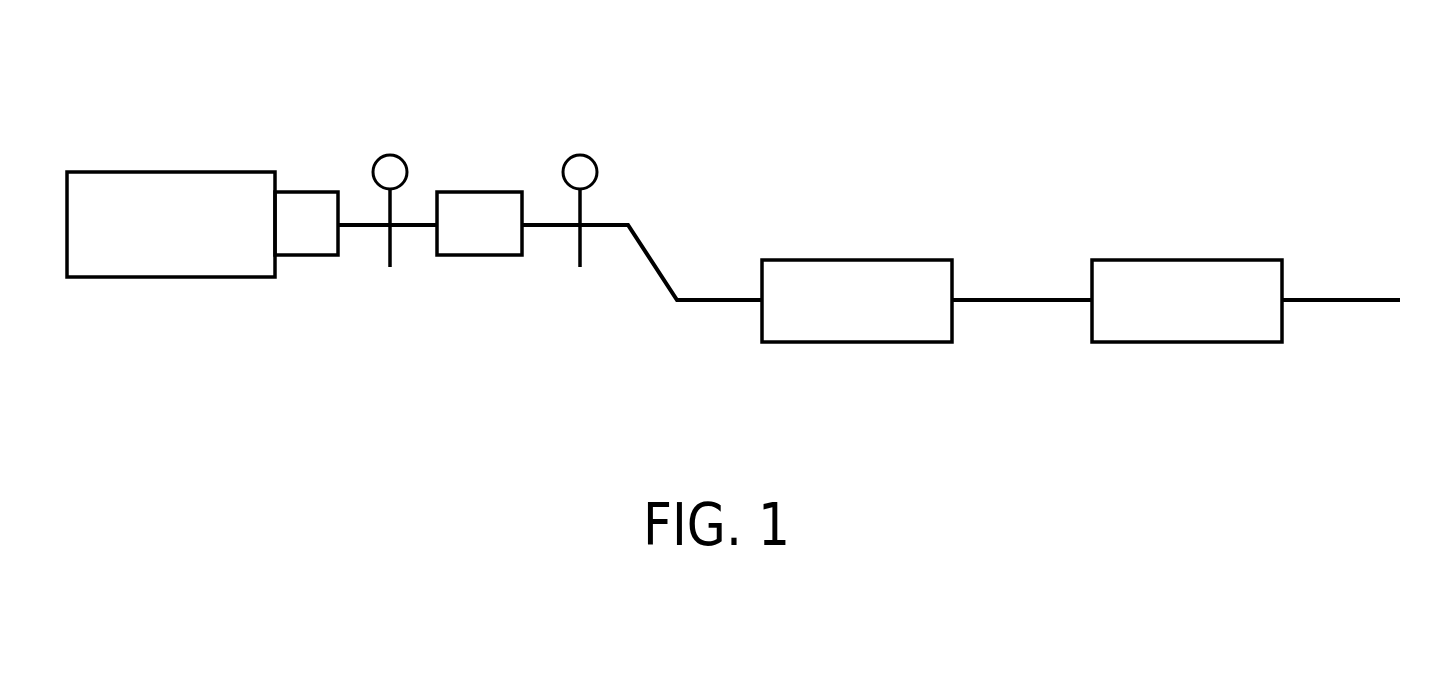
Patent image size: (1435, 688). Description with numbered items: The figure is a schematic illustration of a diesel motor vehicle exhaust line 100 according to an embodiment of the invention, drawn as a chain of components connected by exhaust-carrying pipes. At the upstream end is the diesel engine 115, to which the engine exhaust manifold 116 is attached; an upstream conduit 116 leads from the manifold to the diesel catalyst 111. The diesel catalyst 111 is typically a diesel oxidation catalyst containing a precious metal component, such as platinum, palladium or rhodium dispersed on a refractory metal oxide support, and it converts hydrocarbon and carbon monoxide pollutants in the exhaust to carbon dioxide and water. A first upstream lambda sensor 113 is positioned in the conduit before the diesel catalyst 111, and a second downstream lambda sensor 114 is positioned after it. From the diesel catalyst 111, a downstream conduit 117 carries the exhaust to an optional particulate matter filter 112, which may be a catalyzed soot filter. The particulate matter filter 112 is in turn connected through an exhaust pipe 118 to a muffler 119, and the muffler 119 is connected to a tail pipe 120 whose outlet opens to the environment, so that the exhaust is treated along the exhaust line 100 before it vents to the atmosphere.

The diesel motor vehicle exhaust line 100 is at (1109, 61).
The diesel catalyst 111 is at (482, 191).
The particulate matter filter 112 is at (863, 259).
The first upstream lambda sensor 113 is at (393, 155).
The second downstream lambda sensor 114 is at (585, 155).
The diesel engine 115 is at (168, 171).
The engine exhaust manifold 116 is at (308, 191).
The downstream conduit 117 is at (700, 297).
The exhaust pipe 118 is at (1017, 297).
The muffler 119 is at (1173, 259).
The tail pipe 120 is at (1347, 297).